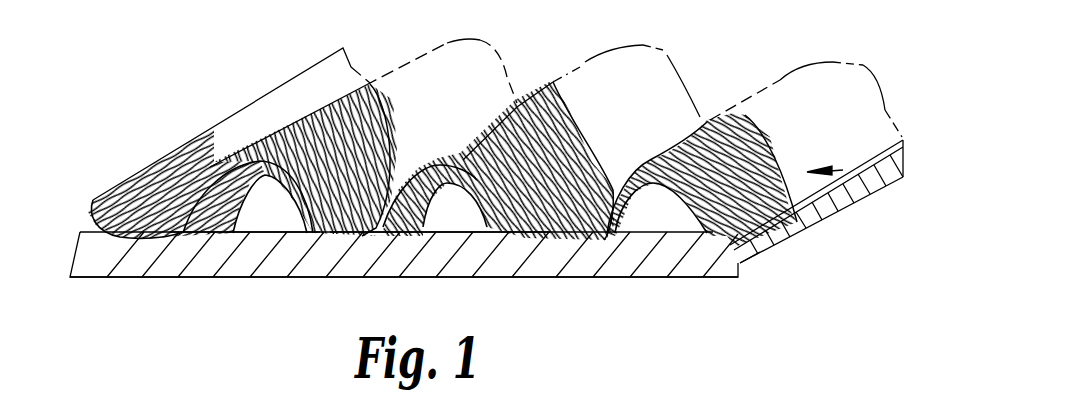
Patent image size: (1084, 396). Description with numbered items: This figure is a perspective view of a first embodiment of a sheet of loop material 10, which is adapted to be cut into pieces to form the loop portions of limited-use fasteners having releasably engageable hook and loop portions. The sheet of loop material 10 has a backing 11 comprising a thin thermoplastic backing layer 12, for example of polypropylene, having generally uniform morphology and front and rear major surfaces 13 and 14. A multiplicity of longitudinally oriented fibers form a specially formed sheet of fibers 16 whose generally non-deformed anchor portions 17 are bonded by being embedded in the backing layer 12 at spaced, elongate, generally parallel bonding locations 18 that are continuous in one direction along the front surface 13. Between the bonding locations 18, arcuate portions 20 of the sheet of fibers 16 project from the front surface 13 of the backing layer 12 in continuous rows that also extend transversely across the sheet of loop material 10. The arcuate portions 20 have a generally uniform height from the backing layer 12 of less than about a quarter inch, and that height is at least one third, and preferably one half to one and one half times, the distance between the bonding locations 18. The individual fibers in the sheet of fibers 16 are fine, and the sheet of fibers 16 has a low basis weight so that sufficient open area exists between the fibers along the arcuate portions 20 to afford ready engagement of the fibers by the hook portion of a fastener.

The sheet of loop material 10 is at (885, 183).
The backing 11 is at (760, 262).
The thermoplastic backing layer 12 is at (136, 266).
The front major surface 13 is at (255, 195).
The rear major surface 14 is at (611, 278).
The sheet of fibers 16 is at (667, 80).
The anchor portions 17 is at (543, 234).
The bonding locations 18 is at (312, 236).
The arcuate portions 20 is at (248, 188).